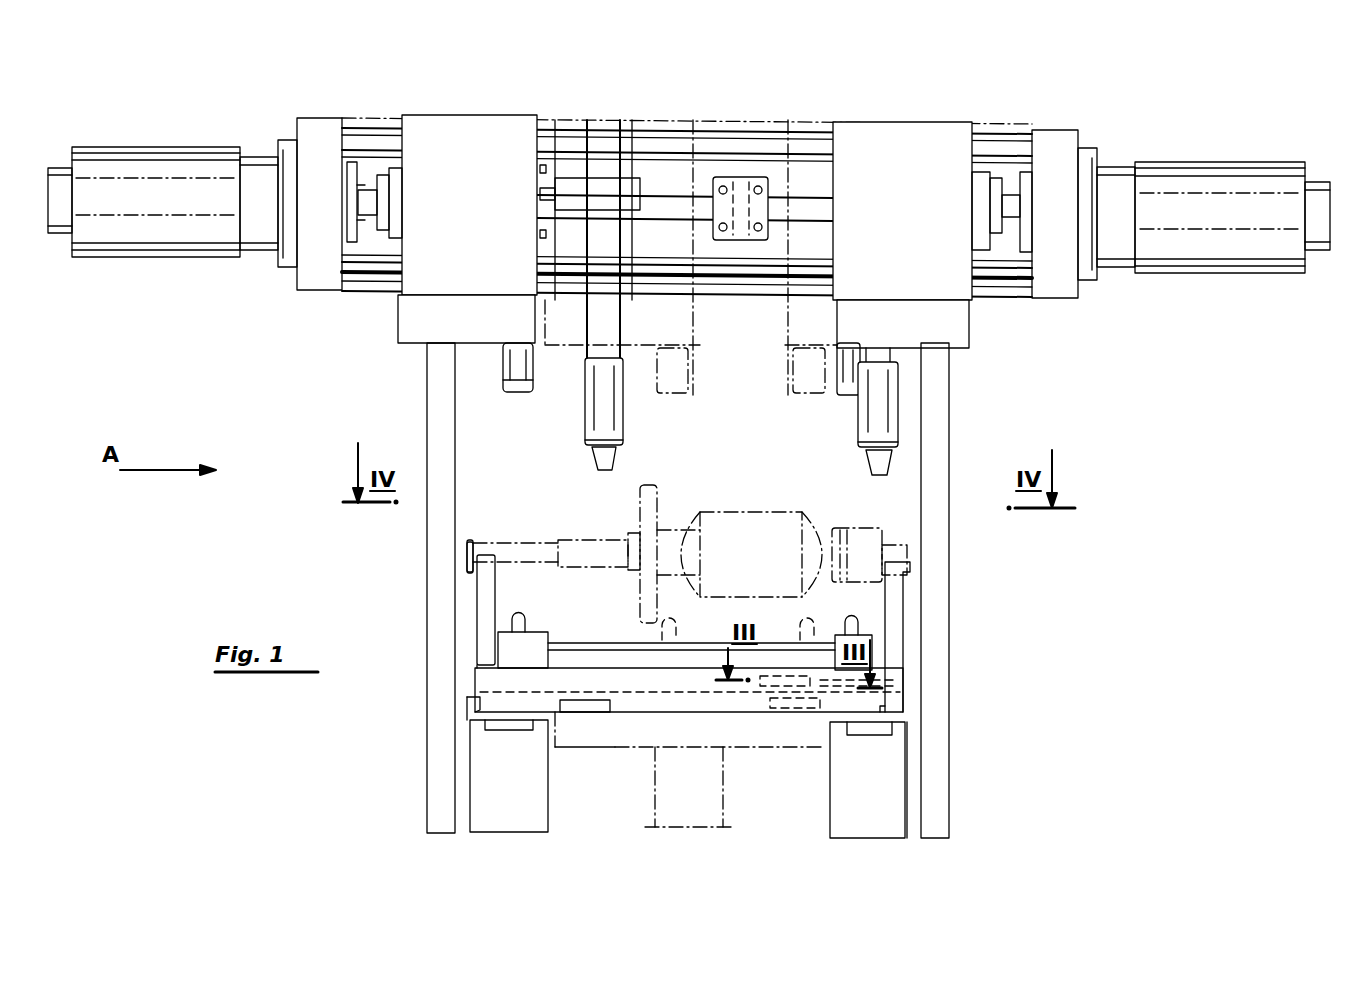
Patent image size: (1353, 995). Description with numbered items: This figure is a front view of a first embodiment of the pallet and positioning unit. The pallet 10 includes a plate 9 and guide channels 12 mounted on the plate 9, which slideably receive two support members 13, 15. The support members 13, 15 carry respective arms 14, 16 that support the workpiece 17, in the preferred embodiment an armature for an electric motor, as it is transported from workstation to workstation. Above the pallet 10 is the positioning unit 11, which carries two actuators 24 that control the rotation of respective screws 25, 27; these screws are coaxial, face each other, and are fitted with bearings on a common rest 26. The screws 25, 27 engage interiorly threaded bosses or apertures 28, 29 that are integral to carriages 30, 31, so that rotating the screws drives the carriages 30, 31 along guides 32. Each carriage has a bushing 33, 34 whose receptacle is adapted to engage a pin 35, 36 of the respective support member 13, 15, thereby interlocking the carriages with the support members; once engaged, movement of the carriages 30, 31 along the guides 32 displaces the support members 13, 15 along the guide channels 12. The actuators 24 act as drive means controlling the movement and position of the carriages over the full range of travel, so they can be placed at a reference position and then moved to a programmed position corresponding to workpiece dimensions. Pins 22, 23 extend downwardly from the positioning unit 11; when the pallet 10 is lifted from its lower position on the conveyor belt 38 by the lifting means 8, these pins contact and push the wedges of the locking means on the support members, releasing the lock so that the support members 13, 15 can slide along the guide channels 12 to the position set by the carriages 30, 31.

The lifting means 8 is at (602, 735).
The plate 9 is at (636, 708).
The pallet 10 is at (590, 825).
The positioning unit 11 is at (672, 97).
The guide channels 12 is at (700, 655).
The support member 13 is at (532, 638).
The arm 14 is at (480, 582).
The support member 15 is at (895, 655).
The arm 16 is at (905, 595).
The workpiece 17 is at (758, 520).
The pin 22 is at (600, 416).
The pin 23 is at (872, 428).
The actuators 24 is at (122, 170).
The screw 25 is at (363, 165).
The common rest 26 is at (722, 185).
The screw 27 is at (1012, 205).
The interiorly threaded boss 28 is at (388, 178).
The interiorly threaded boss 29 is at (982, 190).
The carriage 30 is at (462, 157).
The carriage 31 is at (902, 143).
The guides 32 is at (568, 142).
The bushing 33 is at (503, 372).
The bushing 34 is at (793, 378).
The pin 35 is at (528, 622).
The pin 36 is at (850, 628).
The conveyor belt 38 is at (495, 810).